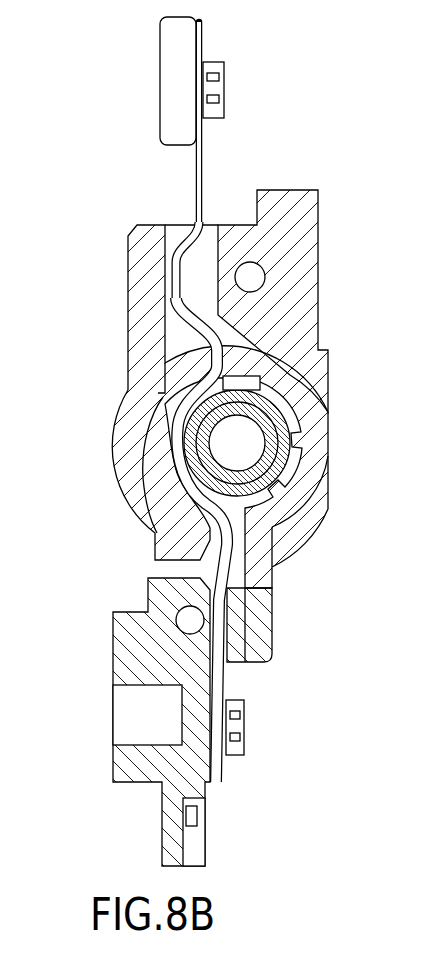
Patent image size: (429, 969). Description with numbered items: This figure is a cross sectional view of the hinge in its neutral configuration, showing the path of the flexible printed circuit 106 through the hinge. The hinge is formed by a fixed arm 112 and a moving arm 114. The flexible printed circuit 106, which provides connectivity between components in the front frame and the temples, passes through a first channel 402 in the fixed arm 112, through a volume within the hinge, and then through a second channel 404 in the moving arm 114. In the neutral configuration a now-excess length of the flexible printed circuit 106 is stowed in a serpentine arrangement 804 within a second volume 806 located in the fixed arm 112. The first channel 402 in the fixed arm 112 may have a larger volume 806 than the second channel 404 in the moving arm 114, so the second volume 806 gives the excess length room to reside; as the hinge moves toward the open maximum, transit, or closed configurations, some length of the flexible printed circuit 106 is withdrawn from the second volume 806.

The flexible printed circuit 106 is at (206, 164).
The fixed arm 112 is at (145, 280).
The moving arm 114 is at (125, 645).
The first channel 402 is at (173, 222).
The second channel 404 is at (237, 665).
The serpentine arrangement 804 is at (182, 318).
The second volume 806 is at (203, 264).